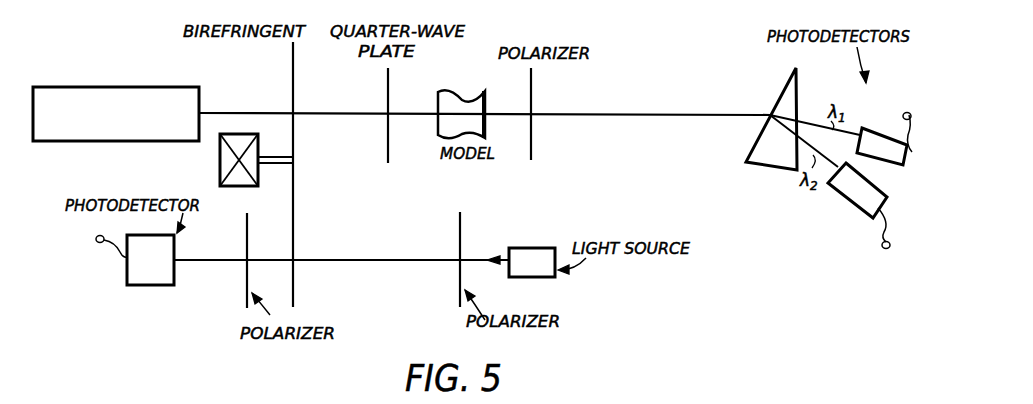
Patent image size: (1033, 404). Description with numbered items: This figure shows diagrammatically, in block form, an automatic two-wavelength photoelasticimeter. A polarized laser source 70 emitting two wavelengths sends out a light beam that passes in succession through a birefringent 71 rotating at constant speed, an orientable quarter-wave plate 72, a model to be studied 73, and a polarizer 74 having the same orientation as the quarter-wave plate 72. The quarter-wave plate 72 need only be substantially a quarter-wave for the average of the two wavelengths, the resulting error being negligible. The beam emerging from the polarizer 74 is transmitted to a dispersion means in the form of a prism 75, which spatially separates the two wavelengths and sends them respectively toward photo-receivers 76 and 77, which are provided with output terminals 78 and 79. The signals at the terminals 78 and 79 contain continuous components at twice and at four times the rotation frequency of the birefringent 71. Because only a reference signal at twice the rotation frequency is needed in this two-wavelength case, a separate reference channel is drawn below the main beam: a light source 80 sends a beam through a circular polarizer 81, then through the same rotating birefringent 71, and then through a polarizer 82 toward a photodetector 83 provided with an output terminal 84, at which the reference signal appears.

The polarized laser source 70 is at (140, 87).
The birefringent 71 is at (293, 62).
The quarter-wave plate 72 is at (388, 70).
The model to be studied 73 is at (462, 92).
The polarizer 74 is at (531, 94).
The prism 75 is at (783, 97).
The photo-receiver 76 is at (876, 130).
The photo-receiver 77 is at (845, 205).
The output terminal 78 is at (910, 113).
The output terminal 79 is at (887, 249).
The light source 80 is at (537, 247).
The circular polarizer 81 is at (460, 232).
The polarizer 82 is at (247, 302).
The photodetector 83 is at (145, 285).
The output terminal 84 is at (96, 238).